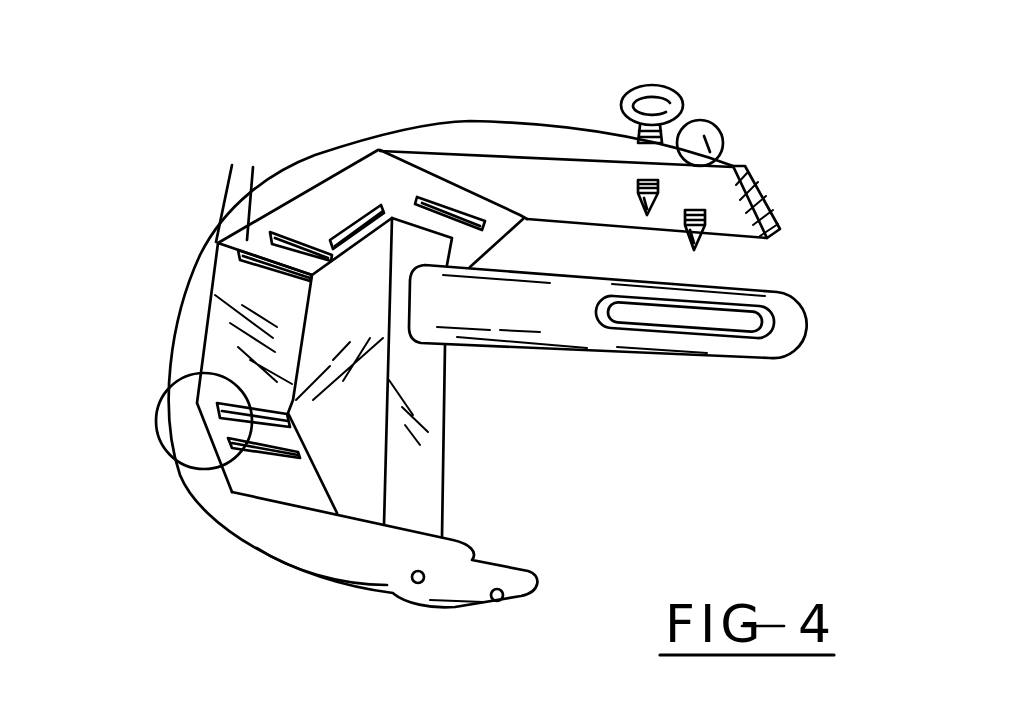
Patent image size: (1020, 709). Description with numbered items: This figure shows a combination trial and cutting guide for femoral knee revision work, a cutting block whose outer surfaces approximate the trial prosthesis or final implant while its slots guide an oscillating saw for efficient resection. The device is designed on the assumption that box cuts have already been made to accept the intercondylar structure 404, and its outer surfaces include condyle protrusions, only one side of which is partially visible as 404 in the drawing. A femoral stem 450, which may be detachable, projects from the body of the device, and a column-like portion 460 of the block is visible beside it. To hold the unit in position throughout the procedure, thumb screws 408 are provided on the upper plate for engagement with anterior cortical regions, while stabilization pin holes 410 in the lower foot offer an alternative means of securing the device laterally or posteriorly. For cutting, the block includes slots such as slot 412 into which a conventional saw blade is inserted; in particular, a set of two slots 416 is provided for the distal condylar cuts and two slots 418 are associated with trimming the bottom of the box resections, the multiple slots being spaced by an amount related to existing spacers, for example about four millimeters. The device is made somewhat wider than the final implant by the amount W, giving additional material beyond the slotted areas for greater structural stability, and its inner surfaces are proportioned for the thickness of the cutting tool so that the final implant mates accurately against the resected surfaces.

The intercondylar structure / outer condyle surface protrusion 404 is at (150, 222).
The thumb screws 408 is at (767, 145).
The stabilization pin holes 410 is at (517, 608).
The slot 412 is at (187, 480).
The slots for distal condylar cuts 416 is at (293, 250).
The slots for trimming box resections 418 is at (447, 205).
The femoral stem 450 is at (715, 343).
The column 460 is at (433, 358).
The additional width W is at (243, 168).